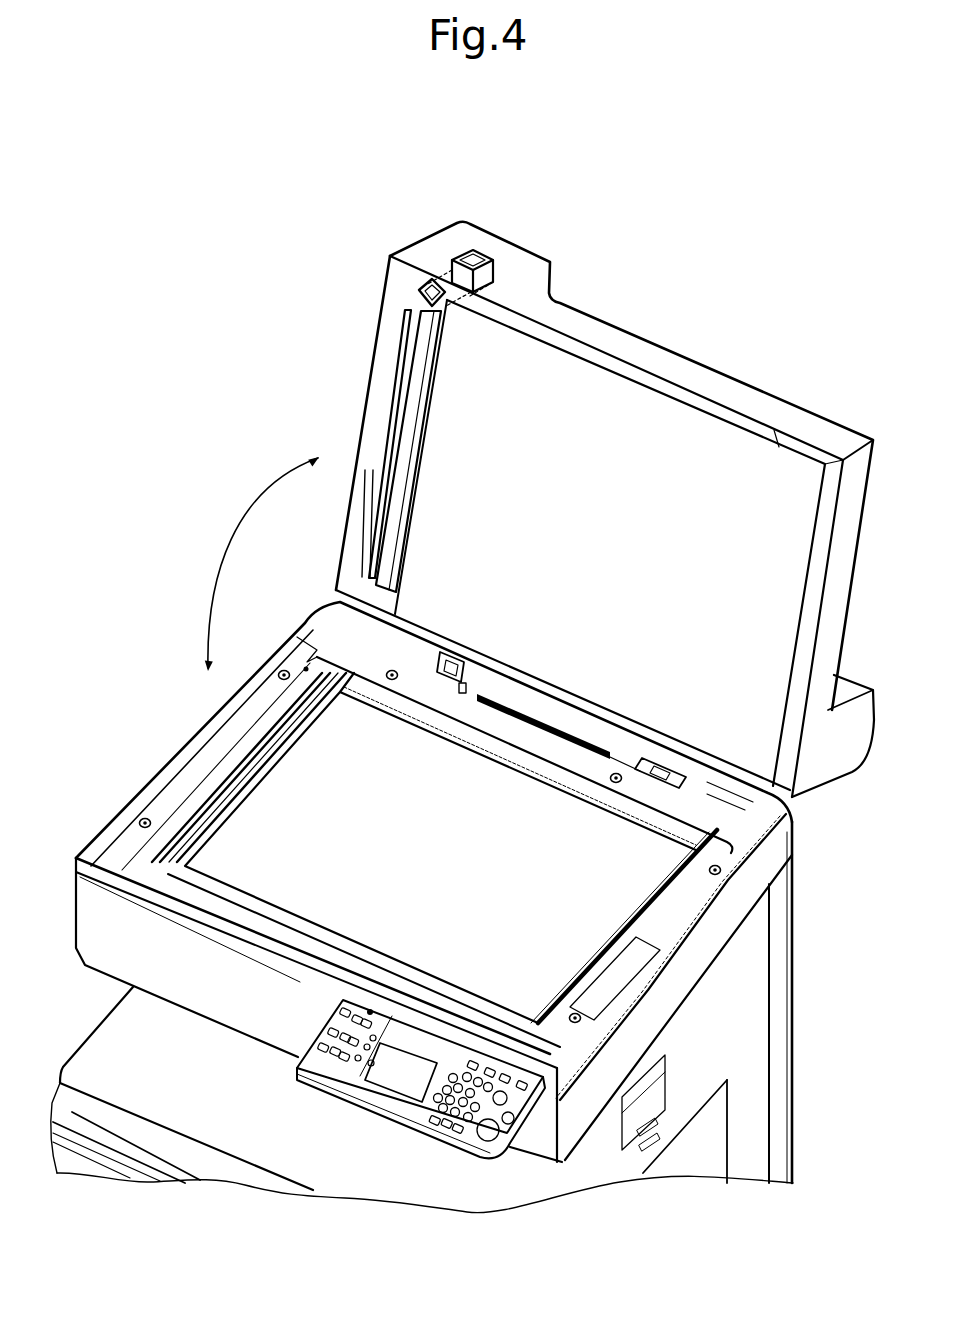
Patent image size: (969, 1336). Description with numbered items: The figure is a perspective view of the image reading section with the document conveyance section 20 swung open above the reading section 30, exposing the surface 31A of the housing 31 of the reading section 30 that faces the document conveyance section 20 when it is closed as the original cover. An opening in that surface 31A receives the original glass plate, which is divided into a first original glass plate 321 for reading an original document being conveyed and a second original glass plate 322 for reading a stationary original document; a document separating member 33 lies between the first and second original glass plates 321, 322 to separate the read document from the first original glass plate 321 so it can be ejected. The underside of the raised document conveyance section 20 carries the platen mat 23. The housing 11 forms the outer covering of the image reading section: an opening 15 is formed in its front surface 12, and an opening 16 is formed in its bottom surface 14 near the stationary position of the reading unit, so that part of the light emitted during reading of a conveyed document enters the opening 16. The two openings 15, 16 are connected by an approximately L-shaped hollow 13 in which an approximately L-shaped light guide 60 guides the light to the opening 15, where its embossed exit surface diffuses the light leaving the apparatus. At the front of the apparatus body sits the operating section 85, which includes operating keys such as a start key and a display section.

The housing 11 is at (612, 318).
The front surface 12 is at (628, 350).
The hollow 13 is at (492, 268).
The bottom surface 14 is at (380, 380).
The opening 15 is at (473, 252).
The opening 16 is at (422, 291).
The document conveyance section 20 is at (768, 343).
The platen mat 23 is at (774, 441).
The reading section 30 is at (150, 690).
The housing 31 is at (755, 903).
The surface 31A is at (690, 927).
The document separating member 33 is at (238, 770).
The light guide 60 is at (470, 252).
The operating section 85 is at (500, 1153).
The first original glass plate 321 is at (197, 798).
The second original glass plate 322 is at (607, 907).